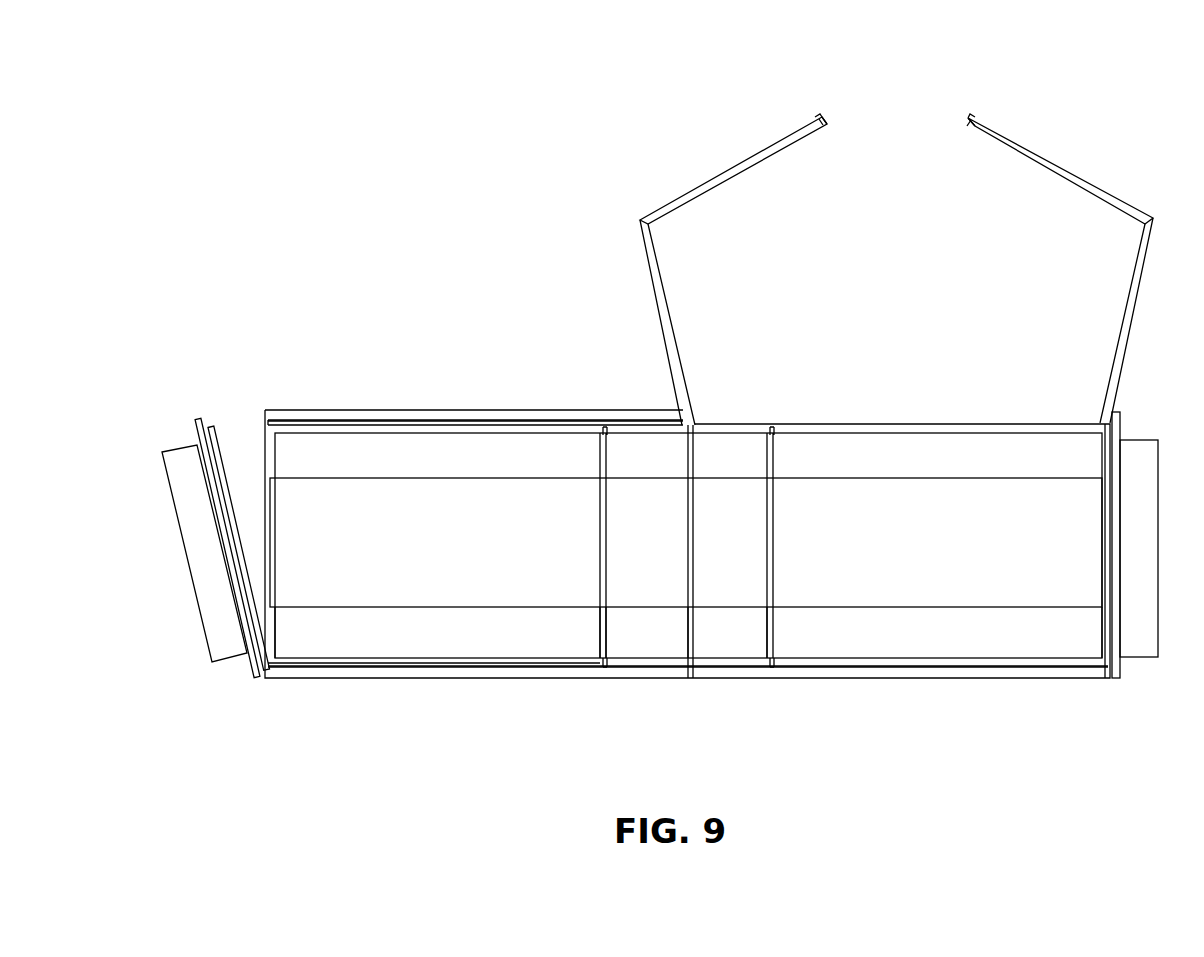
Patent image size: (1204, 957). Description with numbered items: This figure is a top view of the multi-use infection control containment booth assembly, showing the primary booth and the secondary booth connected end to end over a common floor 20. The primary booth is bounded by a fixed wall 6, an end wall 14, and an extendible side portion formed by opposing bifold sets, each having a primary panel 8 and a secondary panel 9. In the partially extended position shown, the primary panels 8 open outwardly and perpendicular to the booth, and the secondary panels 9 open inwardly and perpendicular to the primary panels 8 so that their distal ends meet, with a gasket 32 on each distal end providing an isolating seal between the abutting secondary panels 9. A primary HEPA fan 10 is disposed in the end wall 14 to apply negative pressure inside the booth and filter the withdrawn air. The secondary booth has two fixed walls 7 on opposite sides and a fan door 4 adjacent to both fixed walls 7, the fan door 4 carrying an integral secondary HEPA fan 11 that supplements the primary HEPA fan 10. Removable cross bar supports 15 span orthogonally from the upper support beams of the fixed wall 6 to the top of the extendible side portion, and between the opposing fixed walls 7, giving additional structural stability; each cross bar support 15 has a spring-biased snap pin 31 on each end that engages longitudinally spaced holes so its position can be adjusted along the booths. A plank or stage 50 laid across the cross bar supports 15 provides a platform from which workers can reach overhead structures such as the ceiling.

The fan door 4 is at (195, 438).
The fixed wall 6 is at (980, 678).
The fixed walls 7 is at (522, 410).
The primary panel 8 is at (668, 332).
The secondary panel 9 is at (722, 170).
The primary HEPA fan 10 is at (1160, 488).
The secondary HEPA fan 11 is at (188, 572).
The end wall 14 is at (1122, 425).
The removable cross bar support 15 is at (598, 455).
The floor 20 is at (500, 625).
The spring-biased snap pin 31 is at (620, 657).
The gasket 32 is at (967, 117).
The plank or stage 50 is at (360, 490).